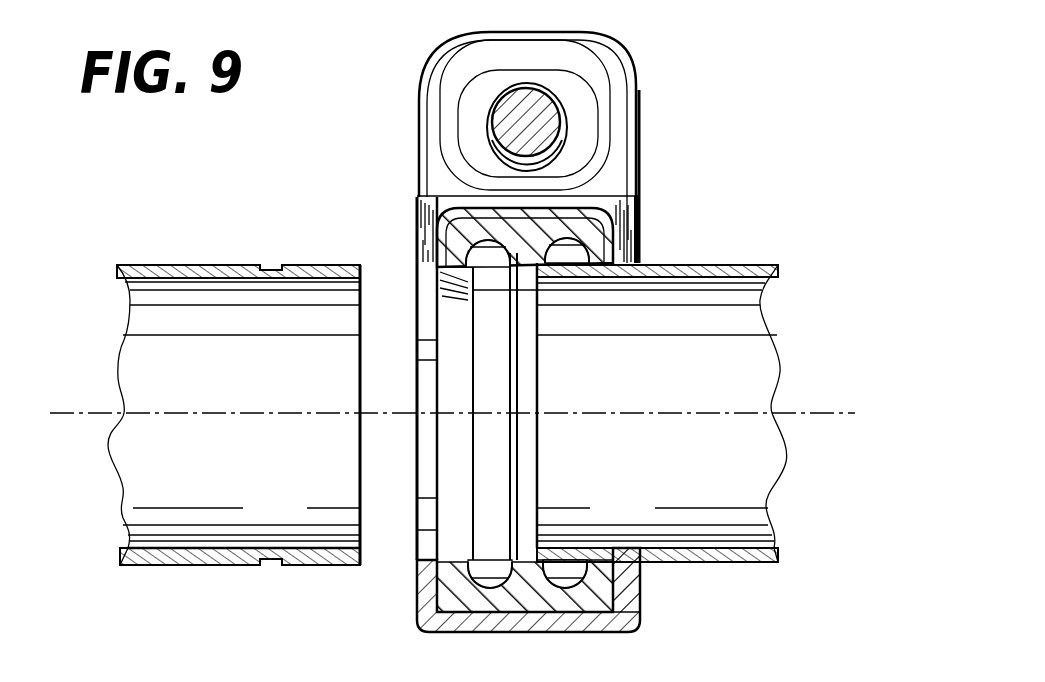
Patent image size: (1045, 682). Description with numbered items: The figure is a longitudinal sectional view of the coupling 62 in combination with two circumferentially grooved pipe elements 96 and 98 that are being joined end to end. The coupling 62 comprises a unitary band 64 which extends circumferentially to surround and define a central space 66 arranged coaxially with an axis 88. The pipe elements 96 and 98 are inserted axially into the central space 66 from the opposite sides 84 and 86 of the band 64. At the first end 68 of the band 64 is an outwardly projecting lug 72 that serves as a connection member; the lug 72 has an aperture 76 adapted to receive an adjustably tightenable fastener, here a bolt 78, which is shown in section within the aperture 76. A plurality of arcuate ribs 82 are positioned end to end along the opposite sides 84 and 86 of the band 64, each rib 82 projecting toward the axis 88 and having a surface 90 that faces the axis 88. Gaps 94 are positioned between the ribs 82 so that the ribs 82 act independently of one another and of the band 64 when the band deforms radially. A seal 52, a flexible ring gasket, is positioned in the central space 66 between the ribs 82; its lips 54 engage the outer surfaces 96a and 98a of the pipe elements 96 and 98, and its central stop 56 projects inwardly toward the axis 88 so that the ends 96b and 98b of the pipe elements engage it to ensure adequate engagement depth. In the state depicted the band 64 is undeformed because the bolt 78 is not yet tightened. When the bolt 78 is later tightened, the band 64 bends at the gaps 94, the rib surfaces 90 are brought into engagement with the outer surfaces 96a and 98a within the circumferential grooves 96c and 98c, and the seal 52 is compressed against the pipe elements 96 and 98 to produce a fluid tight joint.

The seal 52 is at (557, 214).
The lips 54 is at (562, 246).
The central stop 56 is at (523, 277).
The coupling 62 is at (633, 157).
The band 64 is at (615, 632).
The central space 66 is at (483, 490).
The first end 68 is at (428, 163).
The lug 72 is at (617, 63).
The aperture 76 is at (541, 84).
The bolt 78 is at (548, 121).
The arcuate ribs 82 is at (423, 253).
The first side 84 is at (418, 618).
The second side 86 is at (633, 588).
The axis 88 is at (103, 413).
The rib surface 90 is at (423, 300).
The gaps 94 is at (415, 350).
The pipe element 96 is at (152, 564).
The outer surface of pipe element 96a is at (175, 566).
The end of pipe element 96b is at (355, 463).
The circumferential groove 96c is at (272, 568).
The pipe element 98 is at (772, 564).
The outer surface of pipe element 98a is at (753, 264).
The end of pipe element 98b is at (540, 440).
The circumferential groove 98c is at (630, 552).